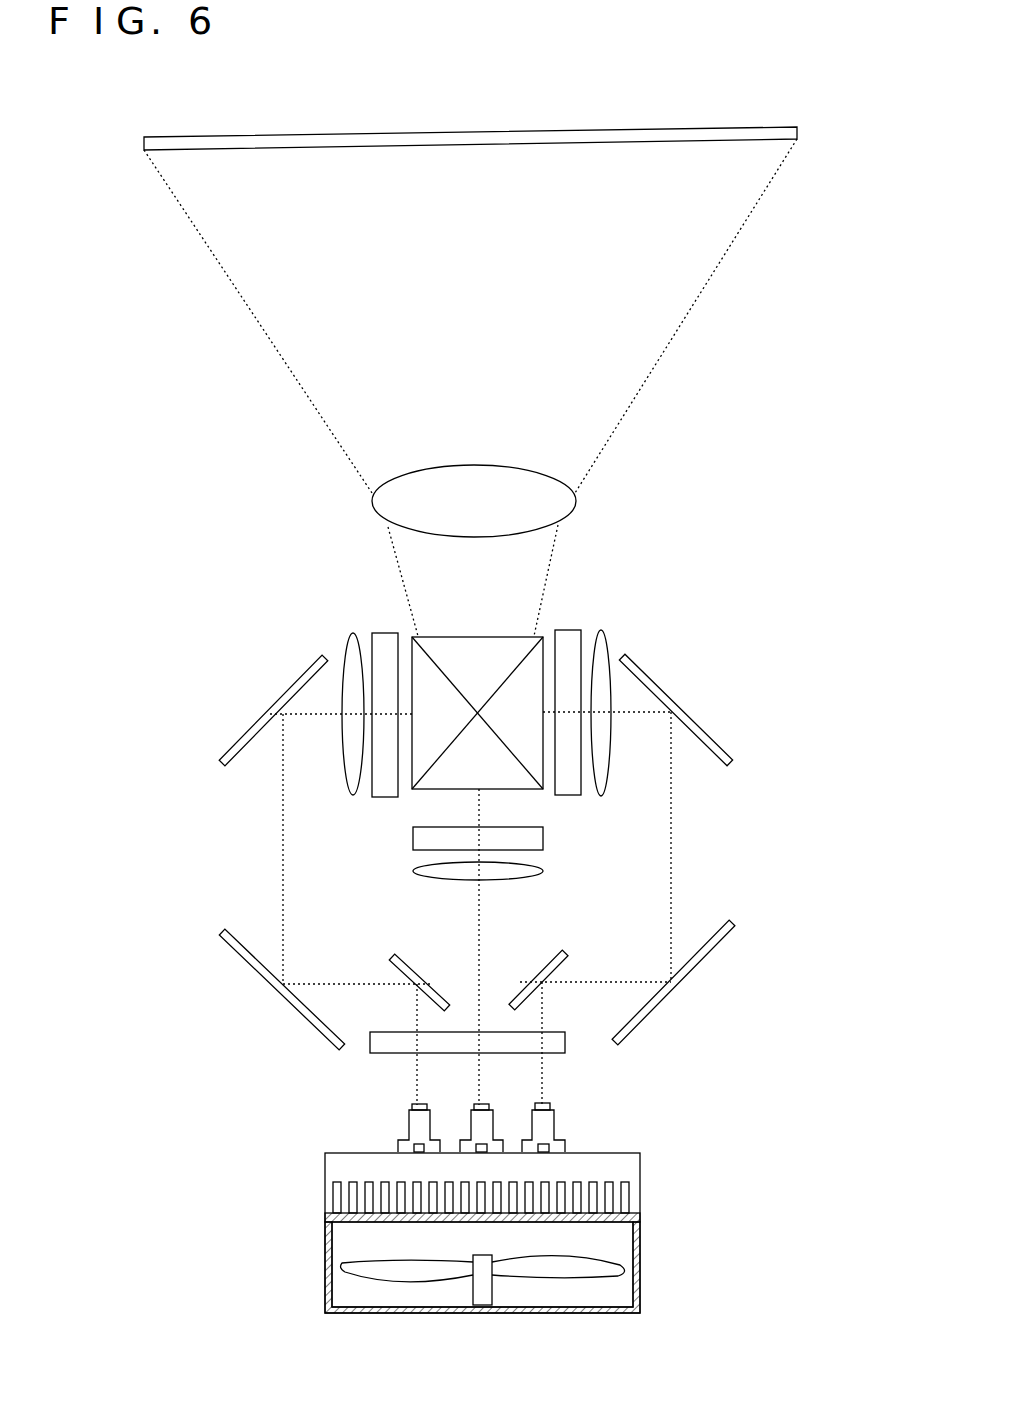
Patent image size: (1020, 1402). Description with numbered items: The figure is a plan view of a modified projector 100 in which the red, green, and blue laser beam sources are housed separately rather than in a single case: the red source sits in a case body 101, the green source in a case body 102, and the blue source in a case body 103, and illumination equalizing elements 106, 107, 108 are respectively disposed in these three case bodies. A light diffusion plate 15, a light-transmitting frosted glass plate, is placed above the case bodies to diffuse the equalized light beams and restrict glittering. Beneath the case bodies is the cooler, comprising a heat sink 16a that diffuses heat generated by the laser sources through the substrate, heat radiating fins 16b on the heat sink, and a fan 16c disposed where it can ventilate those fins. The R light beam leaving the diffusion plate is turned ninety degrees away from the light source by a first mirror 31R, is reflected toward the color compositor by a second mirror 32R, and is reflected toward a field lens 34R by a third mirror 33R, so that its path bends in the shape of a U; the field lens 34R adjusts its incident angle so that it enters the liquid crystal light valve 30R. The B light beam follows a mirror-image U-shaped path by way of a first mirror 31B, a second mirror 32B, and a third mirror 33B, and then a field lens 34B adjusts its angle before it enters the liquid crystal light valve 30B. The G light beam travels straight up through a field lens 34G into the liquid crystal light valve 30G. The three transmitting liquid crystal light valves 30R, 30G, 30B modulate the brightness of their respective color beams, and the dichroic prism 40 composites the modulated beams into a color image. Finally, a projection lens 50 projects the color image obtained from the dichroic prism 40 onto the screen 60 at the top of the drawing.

The projector 100 is at (795, 100).
The screen 60 is at (797, 132).
The projection lens 50 is at (564, 500).
The dichroic prism 40 is at (541, 635).
The liquid crystal light valve 30R is at (384, 632).
The liquid crystal light valve 30G is at (543, 840).
The liquid crystal light valve 30B is at (567, 630).
The field lens 34R is at (345, 645).
The green field lens 34G is at (543, 871).
The field lens 34B is at (600, 638).
The third mirror 33R is at (276, 716).
The third mirror 33B is at (660, 692).
The second mirror 32R is at (250, 962).
The second mirror 32B is at (702, 960).
The first mirror 31R is at (412, 962).
The first mirror 31B is at (548, 962).
The light diffusion plate 15 is at (565, 1043).
The case body 101 is at (400, 1140).
The case body 102 is at (470, 1128).
The case body 103 is at (554, 1135).
The illumination equalizing element 106 is at (412, 1106).
The illumination equalizing element 107 is at (486, 1110).
The illumination equalizing element 108 is at (550, 1105).
The heat sink 16a is at (640, 1185).
The heat radiating fin 16b is at (326, 1195).
The fan 16c is at (640, 1272).